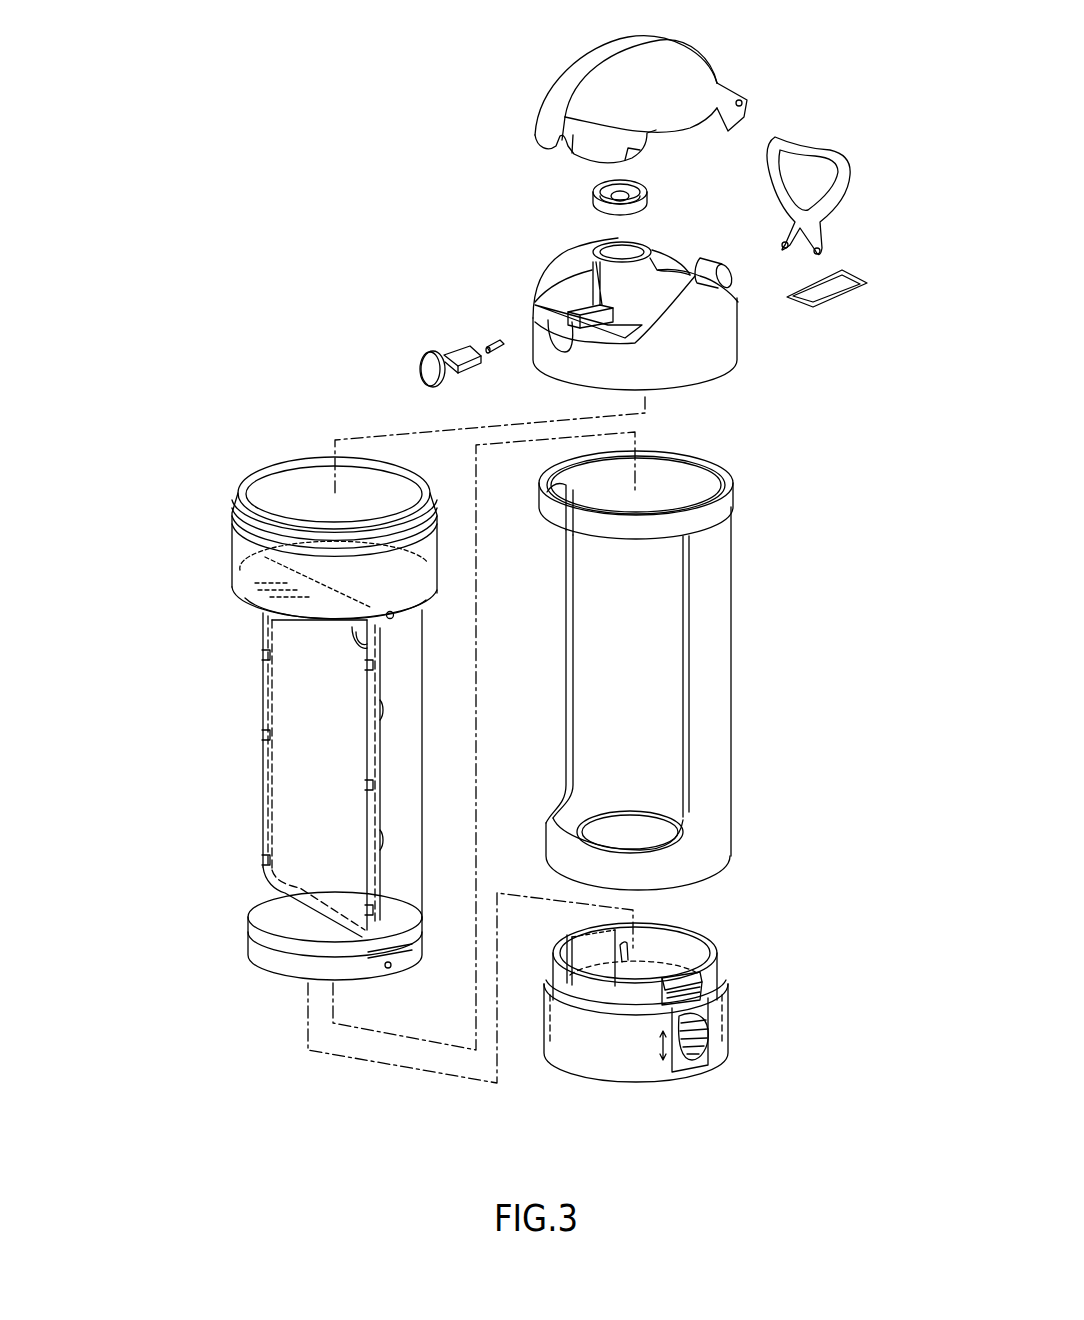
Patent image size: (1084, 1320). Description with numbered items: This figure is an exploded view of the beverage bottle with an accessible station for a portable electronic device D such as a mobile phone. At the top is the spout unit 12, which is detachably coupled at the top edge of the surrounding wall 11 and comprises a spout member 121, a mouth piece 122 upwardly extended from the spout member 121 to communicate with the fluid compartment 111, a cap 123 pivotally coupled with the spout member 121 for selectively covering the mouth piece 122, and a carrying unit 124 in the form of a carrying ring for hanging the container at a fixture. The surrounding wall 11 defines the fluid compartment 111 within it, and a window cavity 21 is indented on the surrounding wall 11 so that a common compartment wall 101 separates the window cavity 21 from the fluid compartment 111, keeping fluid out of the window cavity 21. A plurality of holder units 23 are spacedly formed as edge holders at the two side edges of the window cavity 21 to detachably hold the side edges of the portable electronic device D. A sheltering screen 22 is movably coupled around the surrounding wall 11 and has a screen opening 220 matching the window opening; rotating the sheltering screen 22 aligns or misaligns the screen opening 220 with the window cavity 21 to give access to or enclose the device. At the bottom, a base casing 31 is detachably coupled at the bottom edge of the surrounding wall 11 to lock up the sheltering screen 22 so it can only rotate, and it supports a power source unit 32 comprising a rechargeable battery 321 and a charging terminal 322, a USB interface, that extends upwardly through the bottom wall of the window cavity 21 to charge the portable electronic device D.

The spout unit 12 is at (486, 116).
The spout member 121 is at (713, 330).
The mouth piece 122 is at (540, 300).
The cap 123 is at (542, 138).
The carrying unit 124 is at (798, 152).
The window cavity 21 is at (230, 855).
The surrounding wall 11 is at (407, 758).
The fluid compartment 111 is at (309, 463).
The common compartment wall 101 is at (332, 690).
The holder units 23 is at (268, 773).
The portable electronic device D is at (265, 650).
The sheltering screen 22 is at (705, 624).
The screen opening 220 is at (550, 636).
The base casing 31 is at (727, 1013).
The power source unit 32 is at (810, 903).
The rechargeable battery 321 is at (660, 957).
The charging terminal 322 is at (682, 965).